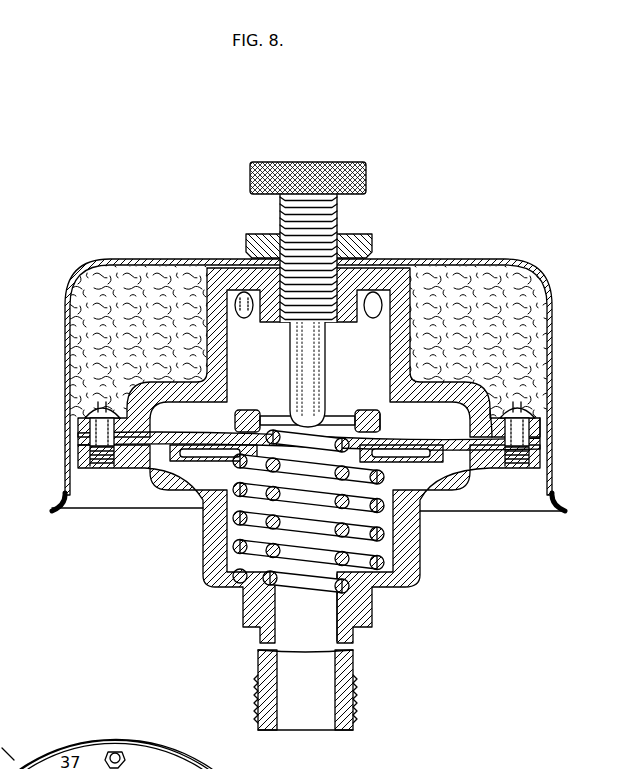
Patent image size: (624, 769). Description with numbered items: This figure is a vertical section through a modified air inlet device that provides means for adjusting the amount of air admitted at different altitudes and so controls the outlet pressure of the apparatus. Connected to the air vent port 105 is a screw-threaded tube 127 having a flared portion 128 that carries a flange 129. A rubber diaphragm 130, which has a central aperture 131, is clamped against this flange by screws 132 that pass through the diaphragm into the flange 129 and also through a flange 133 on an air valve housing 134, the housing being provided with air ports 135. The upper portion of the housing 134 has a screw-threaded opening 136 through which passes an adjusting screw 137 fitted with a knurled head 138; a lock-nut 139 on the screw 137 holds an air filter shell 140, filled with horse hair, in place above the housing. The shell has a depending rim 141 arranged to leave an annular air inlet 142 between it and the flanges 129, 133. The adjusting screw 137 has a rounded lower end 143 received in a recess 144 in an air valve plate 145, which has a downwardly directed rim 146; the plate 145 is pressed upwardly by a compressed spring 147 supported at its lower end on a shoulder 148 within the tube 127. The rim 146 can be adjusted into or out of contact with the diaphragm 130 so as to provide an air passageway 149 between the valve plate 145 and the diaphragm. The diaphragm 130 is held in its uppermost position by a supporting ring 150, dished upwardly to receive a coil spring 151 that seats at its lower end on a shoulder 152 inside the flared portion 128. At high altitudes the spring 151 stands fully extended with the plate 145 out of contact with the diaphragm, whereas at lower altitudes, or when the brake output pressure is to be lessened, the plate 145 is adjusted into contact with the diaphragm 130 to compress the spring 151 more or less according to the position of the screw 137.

The air vent port 105 is at (305, 706).
The screw-threaded tube 127 is at (257, 662).
The flared portion 128 is at (423, 495).
The flange 129 is at (537, 468).
The rubber diaphragm 130 is at (165, 434).
The central aperture 131 is at (276, 424).
The screws 132 is at (121, 410).
The flange 133 is at (537, 417).
The air valve housing 134 is at (398, 358).
The air ports 135 is at (224, 307).
The screw-threaded opening 136 is at (247, 322).
The adjusting screw 137 is at (282, 213).
The knurled head 138 is at (302, 170).
The lock-nut 139 is at (363, 247).
The air filter shell 140 is at (113, 262).
The depending rim 141 is at (60, 488).
The annular air inlet 142 is at (73, 437).
The rounded lower end 143 is at (297, 413).
The recess 144 is at (303, 445).
The air valve plate 145 is at (357, 412).
The downwardly directed rim 146 is at (386, 421).
The compressed spring 147 is at (298, 580).
The shoulder 148 is at (333, 617).
The air passageway 149 is at (238, 425).
The supporting ring 150 is at (212, 450).
The coil spring 151 is at (387, 475).
The shoulder 152 is at (370, 578).